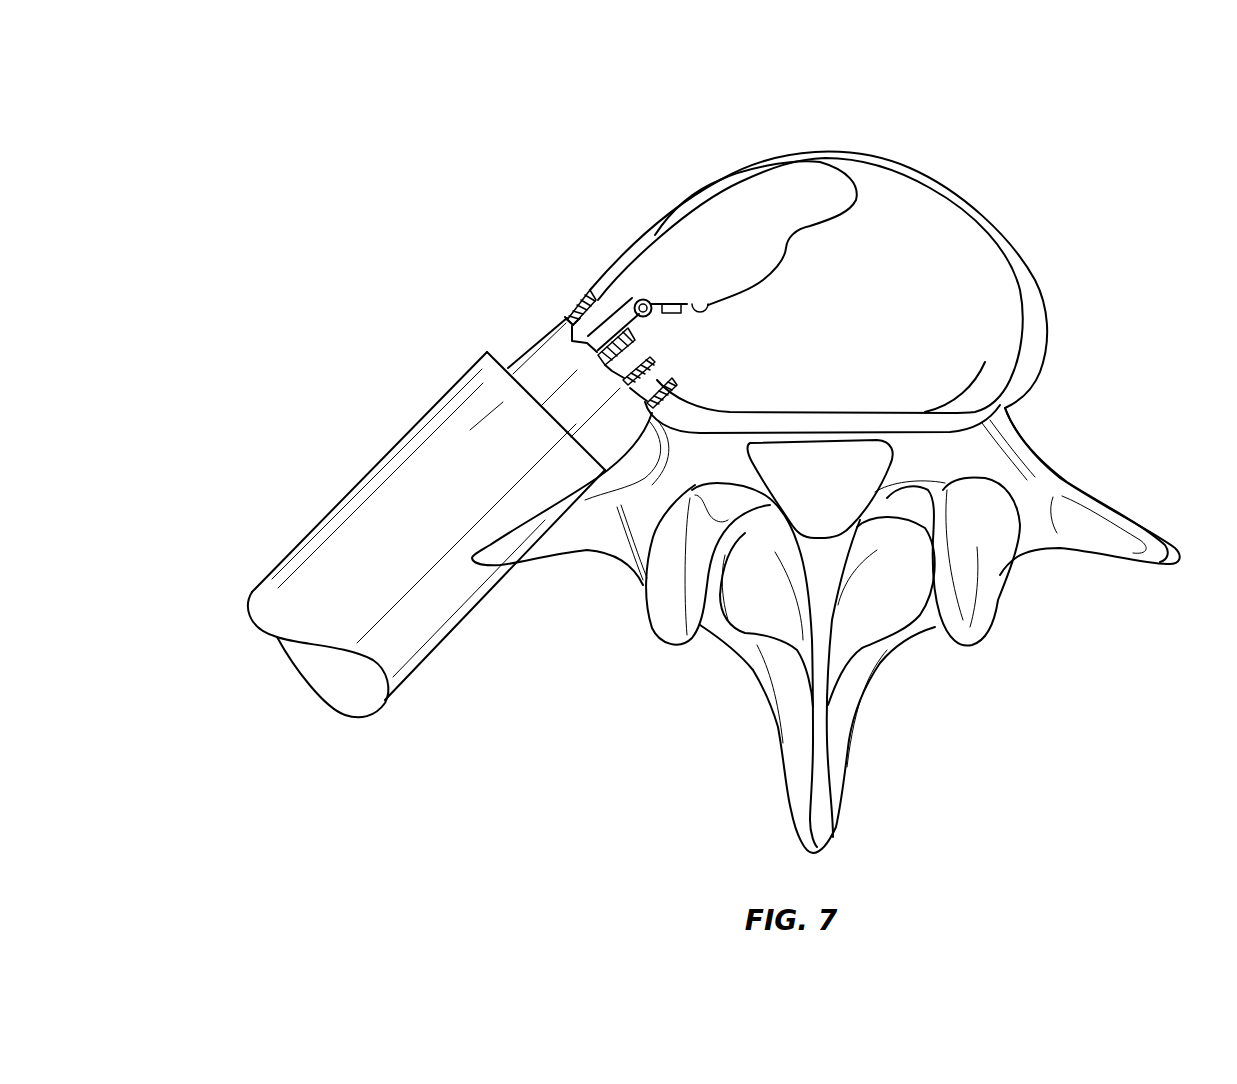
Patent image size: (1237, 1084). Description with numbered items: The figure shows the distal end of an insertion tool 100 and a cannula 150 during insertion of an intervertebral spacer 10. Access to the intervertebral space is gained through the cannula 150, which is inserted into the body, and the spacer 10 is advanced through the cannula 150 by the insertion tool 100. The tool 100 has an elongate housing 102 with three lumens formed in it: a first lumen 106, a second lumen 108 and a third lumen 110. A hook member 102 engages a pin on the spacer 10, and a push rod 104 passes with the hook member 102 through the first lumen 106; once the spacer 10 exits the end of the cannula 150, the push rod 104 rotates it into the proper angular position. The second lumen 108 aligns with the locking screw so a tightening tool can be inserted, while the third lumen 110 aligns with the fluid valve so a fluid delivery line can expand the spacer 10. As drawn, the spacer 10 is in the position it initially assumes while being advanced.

The intervertebral spacer 10 is at (757, 150).
The insertion tool 100 is at (401, 306).
The hook member 102 is at (643, 298).
The push rod 104 is at (612, 293).
The first lumen 106 is at (583, 300).
The second lumen 108 is at (630, 353).
The third lumen 110 is at (655, 377).
The cannula 150 is at (352, 523).